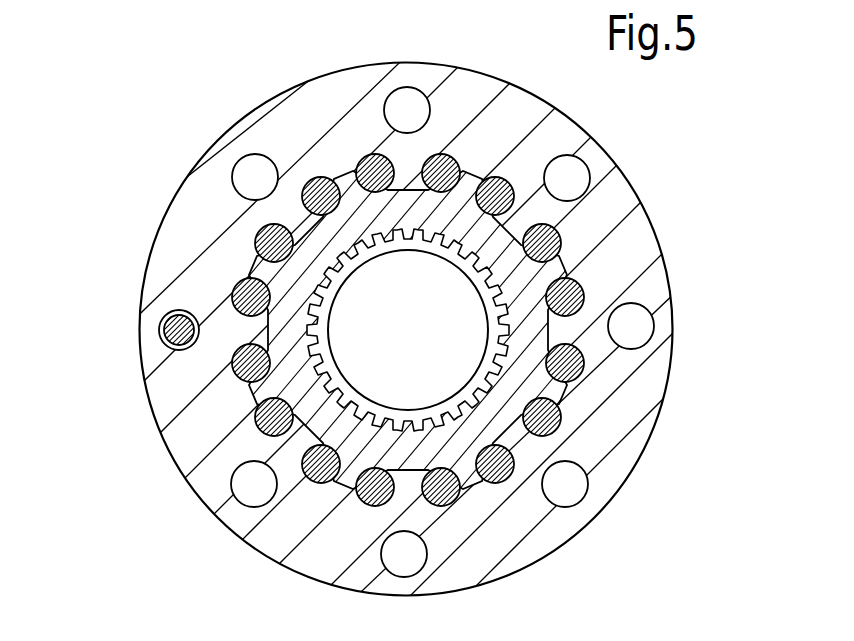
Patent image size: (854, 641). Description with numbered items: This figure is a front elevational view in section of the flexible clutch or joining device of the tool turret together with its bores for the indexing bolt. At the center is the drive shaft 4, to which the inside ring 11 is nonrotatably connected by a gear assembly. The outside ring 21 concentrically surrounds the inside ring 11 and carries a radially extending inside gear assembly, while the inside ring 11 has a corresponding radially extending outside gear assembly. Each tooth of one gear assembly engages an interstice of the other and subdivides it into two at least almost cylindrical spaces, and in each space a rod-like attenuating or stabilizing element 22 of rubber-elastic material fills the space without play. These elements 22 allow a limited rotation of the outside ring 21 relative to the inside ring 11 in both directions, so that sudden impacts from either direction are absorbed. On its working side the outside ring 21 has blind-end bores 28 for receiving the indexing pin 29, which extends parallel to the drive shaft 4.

The drive shaft 4 is at (428, 248).
The inside ring 11 is at (520, 372).
The outside ring 21 is at (597, 222).
The attenuating or stabilizing element 22 is at (330, 192).
The blind-end bore 28 is at (407, 108).
The indexing pin 29 is at (174, 334).